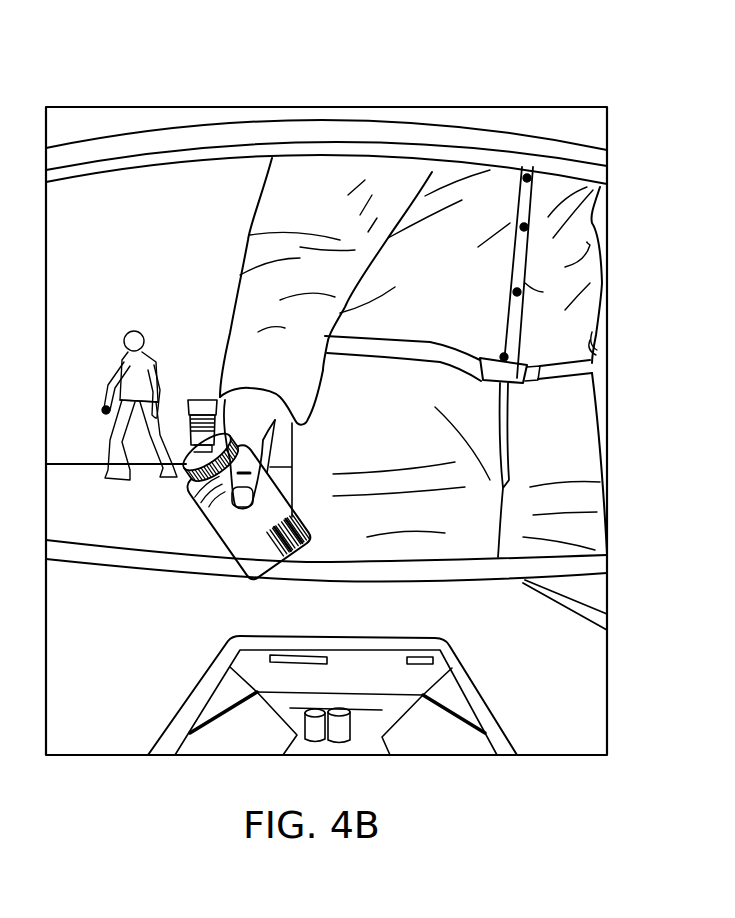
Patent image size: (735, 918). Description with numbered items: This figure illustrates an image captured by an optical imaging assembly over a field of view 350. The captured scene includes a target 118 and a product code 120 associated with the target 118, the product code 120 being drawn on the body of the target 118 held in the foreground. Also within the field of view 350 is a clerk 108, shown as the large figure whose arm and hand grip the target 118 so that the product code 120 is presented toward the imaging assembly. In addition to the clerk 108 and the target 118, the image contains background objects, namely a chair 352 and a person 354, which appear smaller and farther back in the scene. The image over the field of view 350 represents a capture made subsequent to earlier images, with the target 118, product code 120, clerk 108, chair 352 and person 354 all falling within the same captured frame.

The field of view 350 is at (108, 70).
The clerk 108 is at (602, 252).
The target 118 is at (192, 509).
The product code 120 is at (304, 562).
The chair 352 is at (202, 399).
The person 354 is at (133, 330).